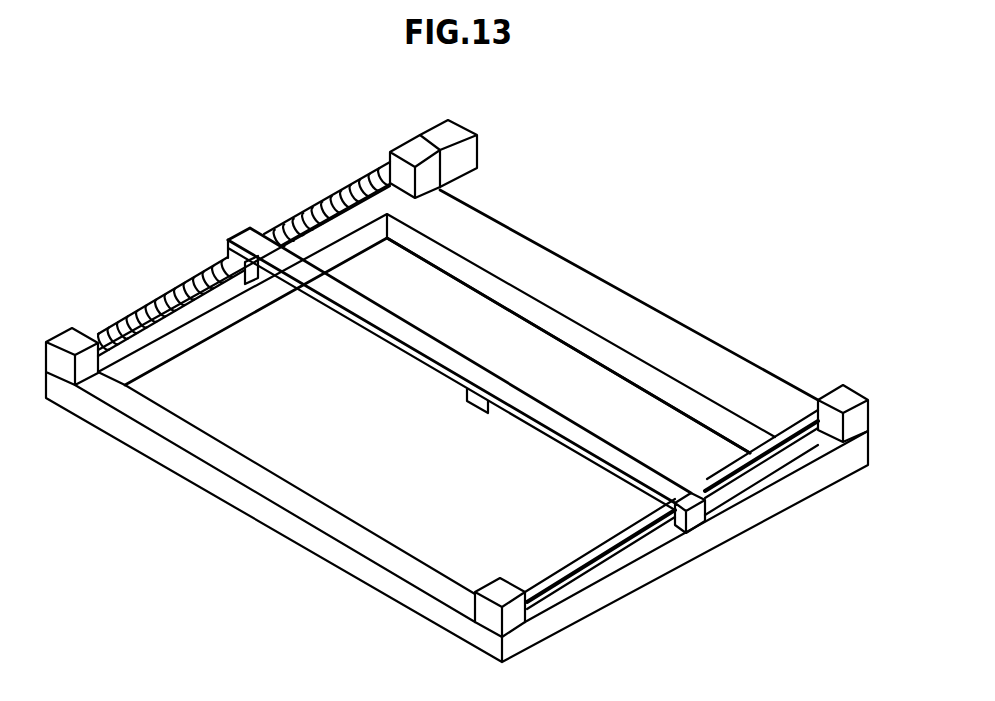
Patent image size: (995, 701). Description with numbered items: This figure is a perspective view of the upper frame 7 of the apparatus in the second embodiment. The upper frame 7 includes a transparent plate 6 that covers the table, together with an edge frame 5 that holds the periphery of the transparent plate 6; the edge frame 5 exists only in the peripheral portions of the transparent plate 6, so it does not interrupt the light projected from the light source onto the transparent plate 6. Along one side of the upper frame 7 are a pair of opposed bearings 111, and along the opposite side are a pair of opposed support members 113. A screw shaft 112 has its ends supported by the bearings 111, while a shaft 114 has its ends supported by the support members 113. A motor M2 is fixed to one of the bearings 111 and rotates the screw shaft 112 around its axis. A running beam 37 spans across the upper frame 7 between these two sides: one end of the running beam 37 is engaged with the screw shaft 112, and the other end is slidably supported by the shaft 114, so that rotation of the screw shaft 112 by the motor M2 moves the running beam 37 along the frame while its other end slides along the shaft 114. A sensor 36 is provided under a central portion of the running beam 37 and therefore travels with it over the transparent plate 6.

The upper frame 7 is at (615, 222).
The edge frame 5 is at (645, 300).
The transparent plate 6 is at (668, 417).
The bearings 111 is at (73, 328).
The motor M2 is at (455, 122).
The screw shaft 112 is at (152, 303).
The running beam 37 is at (252, 236).
The sensor 36 is at (474, 413).
The shaft 114 is at (578, 550).
The support members 113 is at (838, 386).